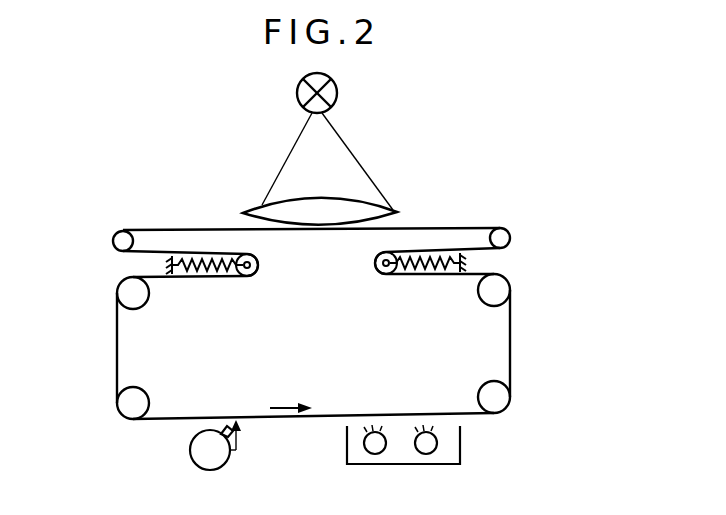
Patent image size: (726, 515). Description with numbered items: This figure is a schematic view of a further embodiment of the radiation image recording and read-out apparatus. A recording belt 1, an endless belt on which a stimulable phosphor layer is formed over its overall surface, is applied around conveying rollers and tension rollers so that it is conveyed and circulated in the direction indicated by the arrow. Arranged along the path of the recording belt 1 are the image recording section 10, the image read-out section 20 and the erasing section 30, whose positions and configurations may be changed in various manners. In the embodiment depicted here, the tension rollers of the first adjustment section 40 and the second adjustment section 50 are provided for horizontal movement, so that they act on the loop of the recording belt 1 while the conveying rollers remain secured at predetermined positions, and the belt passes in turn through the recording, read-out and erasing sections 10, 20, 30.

The recording belt 1 is at (188, 229).
The image recording section 10 is at (397, 176).
The image read-out section 20 is at (170, 440).
The erasing section 30 is at (338, 449).
The first adjustment section 40 is at (110, 264).
The second adjustment section 50 is at (510, 264).